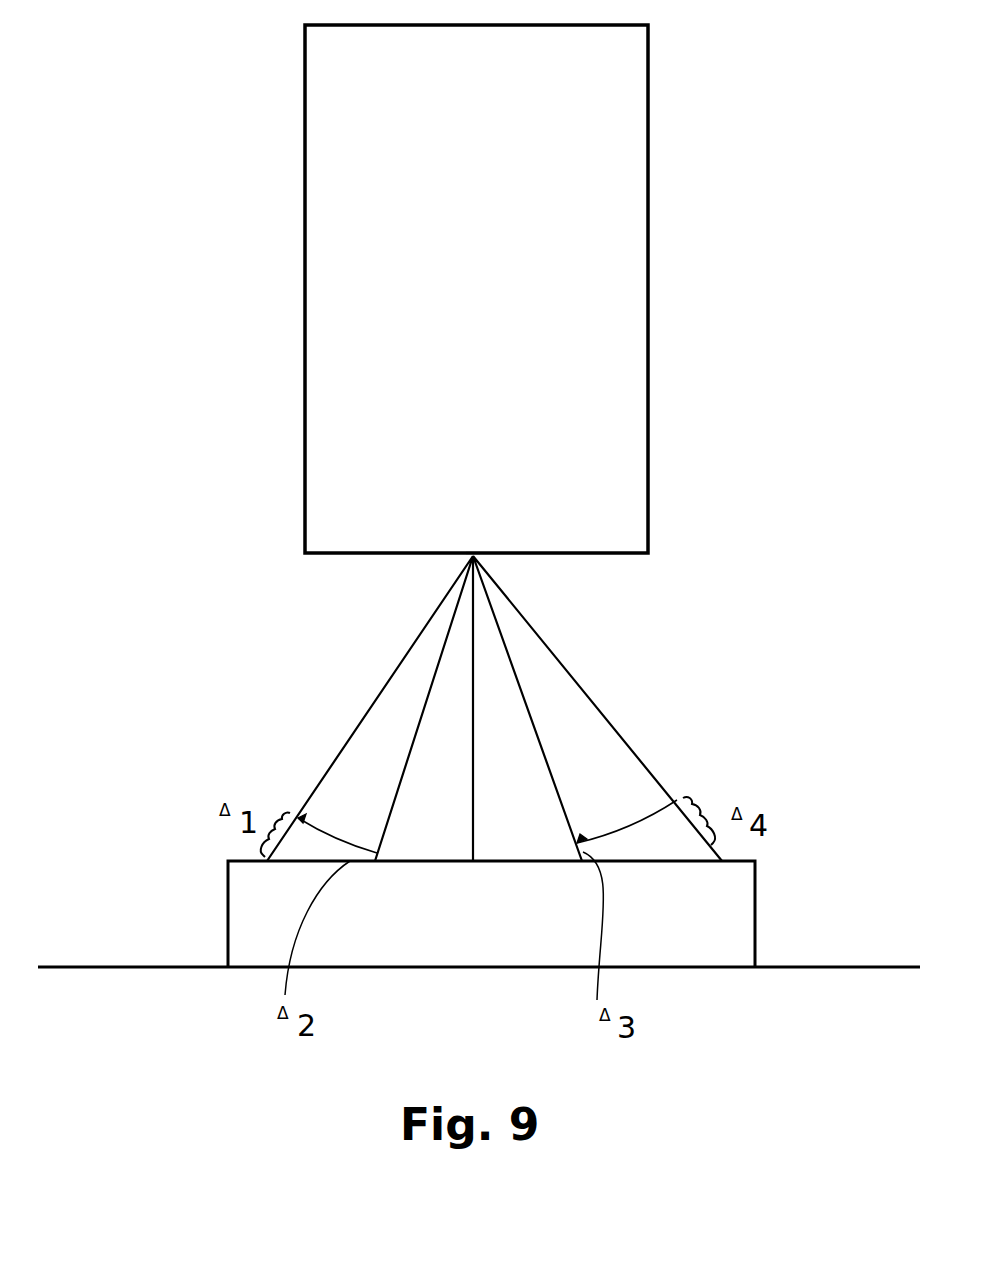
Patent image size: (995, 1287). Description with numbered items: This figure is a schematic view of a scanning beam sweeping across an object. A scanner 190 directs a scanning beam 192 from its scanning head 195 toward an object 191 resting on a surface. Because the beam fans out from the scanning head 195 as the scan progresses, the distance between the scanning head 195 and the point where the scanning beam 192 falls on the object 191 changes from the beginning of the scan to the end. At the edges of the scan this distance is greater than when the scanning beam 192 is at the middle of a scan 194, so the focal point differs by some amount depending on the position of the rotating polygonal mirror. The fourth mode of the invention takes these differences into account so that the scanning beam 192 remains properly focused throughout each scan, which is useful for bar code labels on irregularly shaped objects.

The scanner 190 is at (648, 340).
The object 191 is at (757, 893).
The scanning beam 192 is at (665, 642).
The middle of a scan 194 is at (472, 822).
The scanning head 195 is at (457, 562).